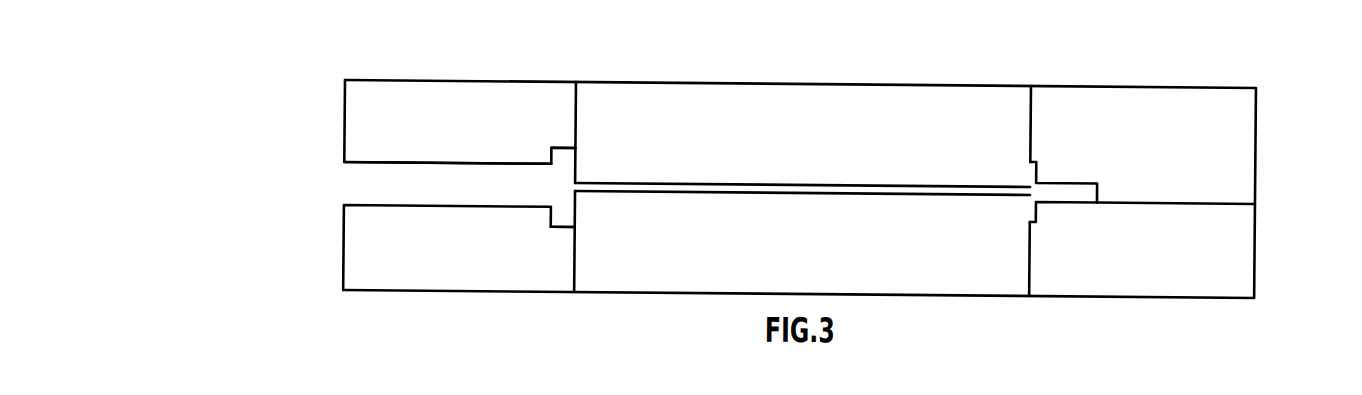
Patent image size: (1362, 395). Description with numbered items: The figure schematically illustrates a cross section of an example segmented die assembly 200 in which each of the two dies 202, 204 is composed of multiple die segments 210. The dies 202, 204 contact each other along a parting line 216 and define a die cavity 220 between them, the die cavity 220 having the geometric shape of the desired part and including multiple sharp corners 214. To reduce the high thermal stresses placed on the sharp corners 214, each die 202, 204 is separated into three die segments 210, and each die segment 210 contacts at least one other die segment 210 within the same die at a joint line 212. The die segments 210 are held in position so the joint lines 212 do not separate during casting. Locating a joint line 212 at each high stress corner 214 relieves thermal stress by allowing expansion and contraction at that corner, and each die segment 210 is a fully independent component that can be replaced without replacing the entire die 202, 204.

The segmented die assembly 200 is at (266, 83).
The die 202 is at (345, 112).
The die 204 is at (345, 226).
The die segment 210 is at (430, 105).
The joint line 212 is at (577, 105).
The sharp corner 214 is at (577, 145).
The parting line 216 is at (1232, 196).
The die cavity 220 is at (362, 184).